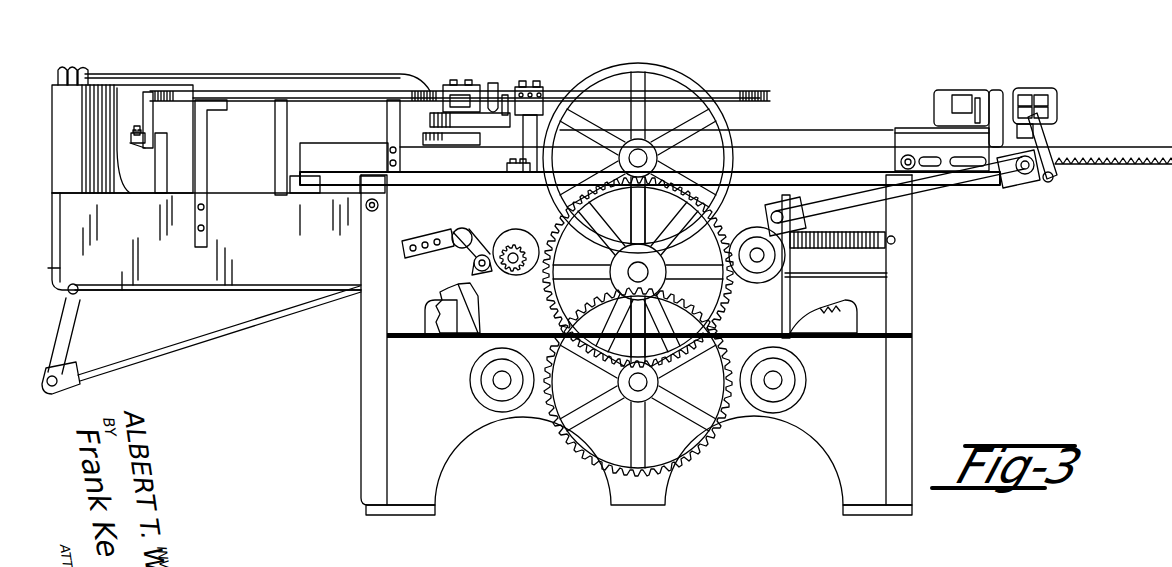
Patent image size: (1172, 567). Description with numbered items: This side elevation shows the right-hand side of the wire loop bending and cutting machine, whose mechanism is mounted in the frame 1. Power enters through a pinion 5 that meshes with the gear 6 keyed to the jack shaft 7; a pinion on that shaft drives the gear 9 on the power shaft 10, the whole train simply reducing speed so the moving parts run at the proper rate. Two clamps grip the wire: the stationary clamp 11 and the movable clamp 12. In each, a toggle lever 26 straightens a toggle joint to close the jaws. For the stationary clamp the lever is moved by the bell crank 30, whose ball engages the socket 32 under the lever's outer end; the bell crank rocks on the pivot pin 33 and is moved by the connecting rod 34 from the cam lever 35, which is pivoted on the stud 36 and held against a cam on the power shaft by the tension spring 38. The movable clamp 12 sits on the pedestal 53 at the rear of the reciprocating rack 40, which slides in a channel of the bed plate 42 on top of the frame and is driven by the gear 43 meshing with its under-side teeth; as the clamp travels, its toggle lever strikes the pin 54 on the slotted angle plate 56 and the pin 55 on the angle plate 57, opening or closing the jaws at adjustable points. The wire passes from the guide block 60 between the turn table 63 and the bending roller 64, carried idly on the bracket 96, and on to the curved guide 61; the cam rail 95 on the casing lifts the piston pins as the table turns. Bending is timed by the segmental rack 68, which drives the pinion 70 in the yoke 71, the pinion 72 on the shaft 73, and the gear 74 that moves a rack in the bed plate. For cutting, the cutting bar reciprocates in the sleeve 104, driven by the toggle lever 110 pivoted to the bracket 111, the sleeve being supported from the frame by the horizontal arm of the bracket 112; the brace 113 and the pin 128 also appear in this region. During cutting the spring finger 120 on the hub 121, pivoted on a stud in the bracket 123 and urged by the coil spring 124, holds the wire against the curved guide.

The frame 1 is at (366, 396).
The pinion 5 is at (650, 158).
The gear 6 is at (560, 222).
The jack shaft 7 is at (636, 274).
The gear 9 is at (576, 432).
The power shaft 10 is at (637, 386).
The stationary clamp 11 is at (1060, 95).
The movable clamp 12 is at (956, 94).
The toggle lever 26 is at (1035, 98).
The bell crank 30 is at (1050, 133).
The socket 32 is at (1058, 110).
The pivot pin 33 is at (1058, 166).
The connecting rod 34 is at (942, 184).
The cam lever 35 is at (890, 275).
The stud 36 is at (780, 380).
The tension spring 38 is at (900, 236).
The reciprocating rack 40 is at (1113, 174).
The bed plate 42 is at (331, 152).
The gear 43 is at (860, 314).
The pedestal 53 is at (935, 102).
The pin 54 is at (980, 104).
The pin 55 is at (610, 110).
The angle plate 56 is at (935, 128).
The angle plate 57 is at (530, 140).
The guide block 60 is at (526, 88).
The curved guide 61 is at (192, 76).
The turn table 63 is at (458, 85).
The bending roller 64 is at (492, 82).
The segmental rack 68 is at (470, 306).
The pinion 70 is at (470, 268).
The yoke 71 is at (482, 224).
The pinion 72 is at (514, 229).
The shaft 73 is at (516, 272).
The gear 74 is at (434, 299).
The cam rail 95 is at (430, 92).
The bracket 96 is at (505, 94).
The sleeve 104 is at (50, 100).
The toggle lever 110 is at (70, 326).
The bracket 111 is at (46, 260).
The bracket 112 is at (198, 287).
The brace 113 is at (190, 343).
The spring finger 120 is at (151, 136).
The hub 121 is at (143, 148).
The bracket 123 is at (166, 165).
The coil spring 124 is at (130, 142).
The pin 128 is at (138, 134).